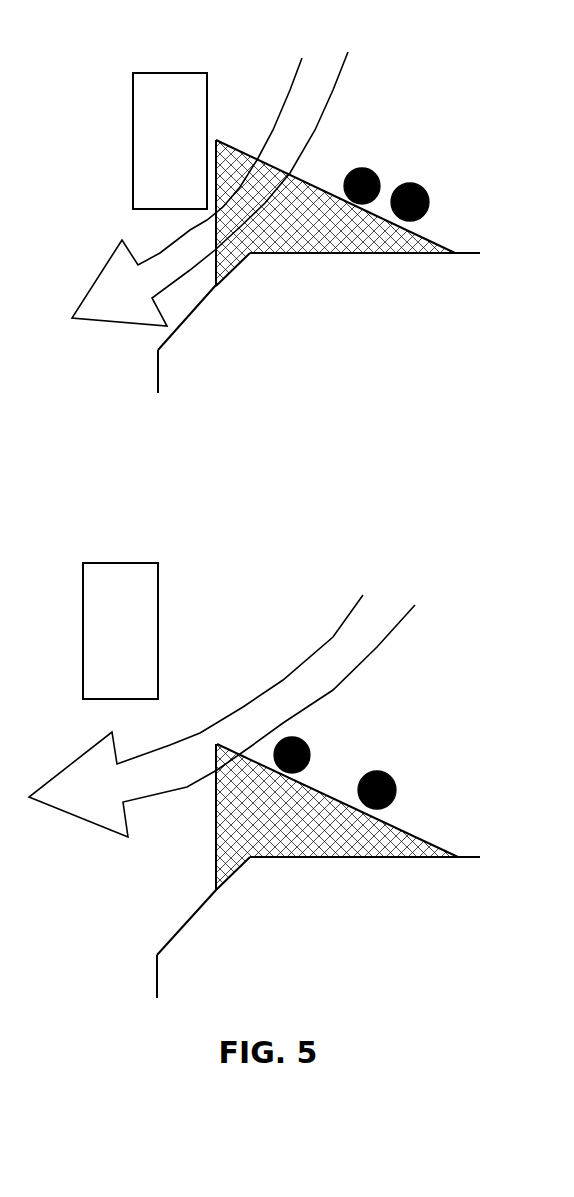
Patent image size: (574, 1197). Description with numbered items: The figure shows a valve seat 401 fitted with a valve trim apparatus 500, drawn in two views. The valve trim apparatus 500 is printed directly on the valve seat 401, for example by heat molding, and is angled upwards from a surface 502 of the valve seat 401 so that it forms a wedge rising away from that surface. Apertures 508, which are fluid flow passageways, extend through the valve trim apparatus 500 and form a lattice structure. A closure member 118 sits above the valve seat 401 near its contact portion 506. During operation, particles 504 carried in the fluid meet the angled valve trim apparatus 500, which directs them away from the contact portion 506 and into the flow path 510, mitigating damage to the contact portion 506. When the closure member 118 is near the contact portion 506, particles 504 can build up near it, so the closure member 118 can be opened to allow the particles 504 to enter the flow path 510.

The closure member 118 is at (143, 100).
The valve seat 401 is at (200, 350).
The valve trim apparatus 500 is at (428, 247).
The surface 502 is at (352, 254).
The particles 504 is at (367, 167).
The contact portion 506 is at (165, 340).
The apertures 508 is at (298, 198).
The flow path 510 is at (320, 63).